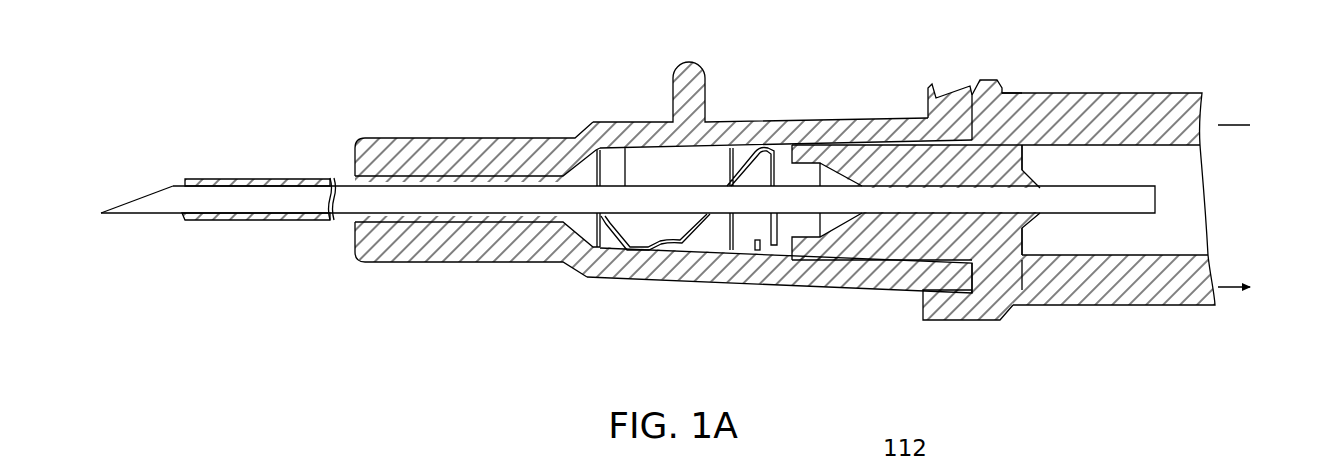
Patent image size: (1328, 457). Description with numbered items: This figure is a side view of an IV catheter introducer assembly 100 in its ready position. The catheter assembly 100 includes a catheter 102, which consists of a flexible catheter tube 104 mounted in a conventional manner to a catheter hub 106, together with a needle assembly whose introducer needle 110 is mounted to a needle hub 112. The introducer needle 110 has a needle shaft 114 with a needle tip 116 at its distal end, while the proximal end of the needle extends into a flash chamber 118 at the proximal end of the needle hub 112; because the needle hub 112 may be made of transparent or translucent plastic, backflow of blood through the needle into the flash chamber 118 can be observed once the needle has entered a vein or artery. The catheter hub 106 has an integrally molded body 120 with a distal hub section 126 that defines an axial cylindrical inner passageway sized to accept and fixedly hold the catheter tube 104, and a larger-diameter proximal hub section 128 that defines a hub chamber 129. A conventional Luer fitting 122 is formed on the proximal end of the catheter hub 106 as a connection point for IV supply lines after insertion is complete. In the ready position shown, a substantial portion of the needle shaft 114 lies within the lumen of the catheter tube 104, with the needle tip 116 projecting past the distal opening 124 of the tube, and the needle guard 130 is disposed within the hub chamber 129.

The IV catheter introducer assembly 100 is at (543, 337).
The catheter 102 is at (625, 107).
The catheter tube 104 is at (338, 180).
The catheter hub 106 is at (440, 140).
The introducer needle 110 is at (158, 203).
The needle hub 112 is at (993, 80).
The needle shaft 114 is at (1016, 222).
The needle tip 116 is at (142, 197).
The flash chamber 118 is at (1200, 165).
The integrally molded body 120 is at (851, 290).
The Luer fitting 122 is at (945, 102).
The distal tip or opening 124 is at (206, 190).
The distal hub section 126 is at (463, 253).
The proximal hub section 128 is at (717, 268).
The hub chamber 129 is at (758, 250).
The needle guard 130 is at (668, 250).